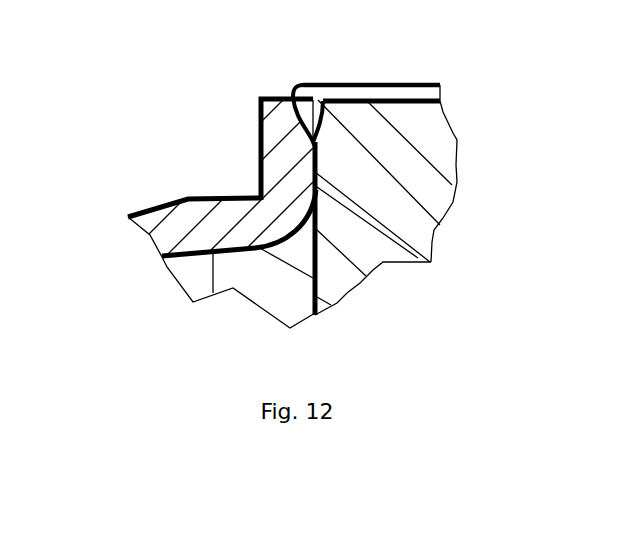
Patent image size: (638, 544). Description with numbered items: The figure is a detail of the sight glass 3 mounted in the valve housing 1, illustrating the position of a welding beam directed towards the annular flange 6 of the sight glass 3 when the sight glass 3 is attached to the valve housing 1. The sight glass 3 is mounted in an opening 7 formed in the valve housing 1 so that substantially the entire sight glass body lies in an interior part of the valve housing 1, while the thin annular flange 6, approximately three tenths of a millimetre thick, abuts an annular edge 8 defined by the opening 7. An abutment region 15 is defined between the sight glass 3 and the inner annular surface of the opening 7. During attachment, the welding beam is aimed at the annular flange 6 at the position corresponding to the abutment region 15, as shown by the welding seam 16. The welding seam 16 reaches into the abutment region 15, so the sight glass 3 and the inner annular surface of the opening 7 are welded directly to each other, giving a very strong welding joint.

The valve housing 1 is at (190, 212).
The sight glass 3 is at (409, 173).
The annular flange 6 is at (363, 85).
The opening 7 is at (276, 258).
The annular edge 8 is at (303, 96).
The abutment region 15 is at (431, 262).
The welding seam 16 is at (312, 85).